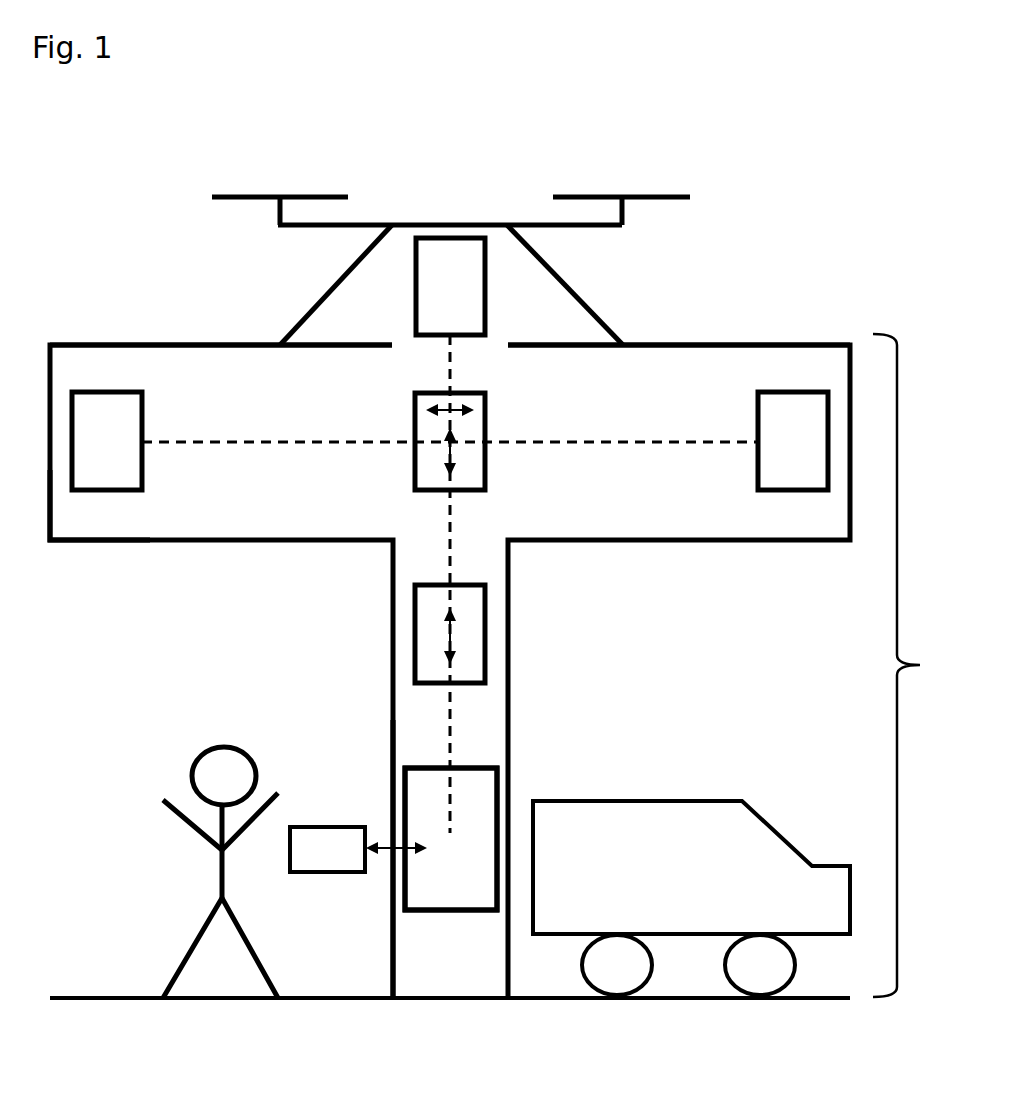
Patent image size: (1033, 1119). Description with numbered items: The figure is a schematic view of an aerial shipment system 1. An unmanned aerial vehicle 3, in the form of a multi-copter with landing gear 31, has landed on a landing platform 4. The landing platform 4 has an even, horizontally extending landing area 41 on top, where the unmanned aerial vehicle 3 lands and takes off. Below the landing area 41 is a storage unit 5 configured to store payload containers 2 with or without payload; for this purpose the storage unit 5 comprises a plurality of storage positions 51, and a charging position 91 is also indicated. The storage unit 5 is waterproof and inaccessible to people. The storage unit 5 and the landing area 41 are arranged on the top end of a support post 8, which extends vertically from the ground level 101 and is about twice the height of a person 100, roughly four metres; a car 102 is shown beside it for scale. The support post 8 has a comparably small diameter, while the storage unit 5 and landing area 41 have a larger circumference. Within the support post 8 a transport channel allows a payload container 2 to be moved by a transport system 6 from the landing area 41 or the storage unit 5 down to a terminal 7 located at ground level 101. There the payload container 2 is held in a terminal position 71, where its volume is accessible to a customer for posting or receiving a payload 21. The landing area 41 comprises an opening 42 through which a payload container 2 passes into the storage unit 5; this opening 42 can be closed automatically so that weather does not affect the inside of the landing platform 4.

The aerial shipment system 1 is at (176, 159).
The payload container 2 is at (485, 311).
The unmanned aerial vehicle 3 is at (414, 226).
The landing platform 4 is at (910, 665).
The storage unit 5 is at (676, 411).
The transport system 6 is at (567, 442).
The terminal 7 is at (393, 805).
The support post 8 is at (393, 683).
The payload 21 is at (343, 864).
The landing gear 31 is at (328, 288).
The landing area 41 is at (655, 346).
The opening in landing area 42 is at (417, 345).
The storage position 51 is at (89, 550).
The terminal position 71 is at (495, 803).
The charging position 91 is at (108, 518).
The person 100 is at (198, 782).
The ground level 101 is at (145, 997).
The car 102 is at (682, 896).